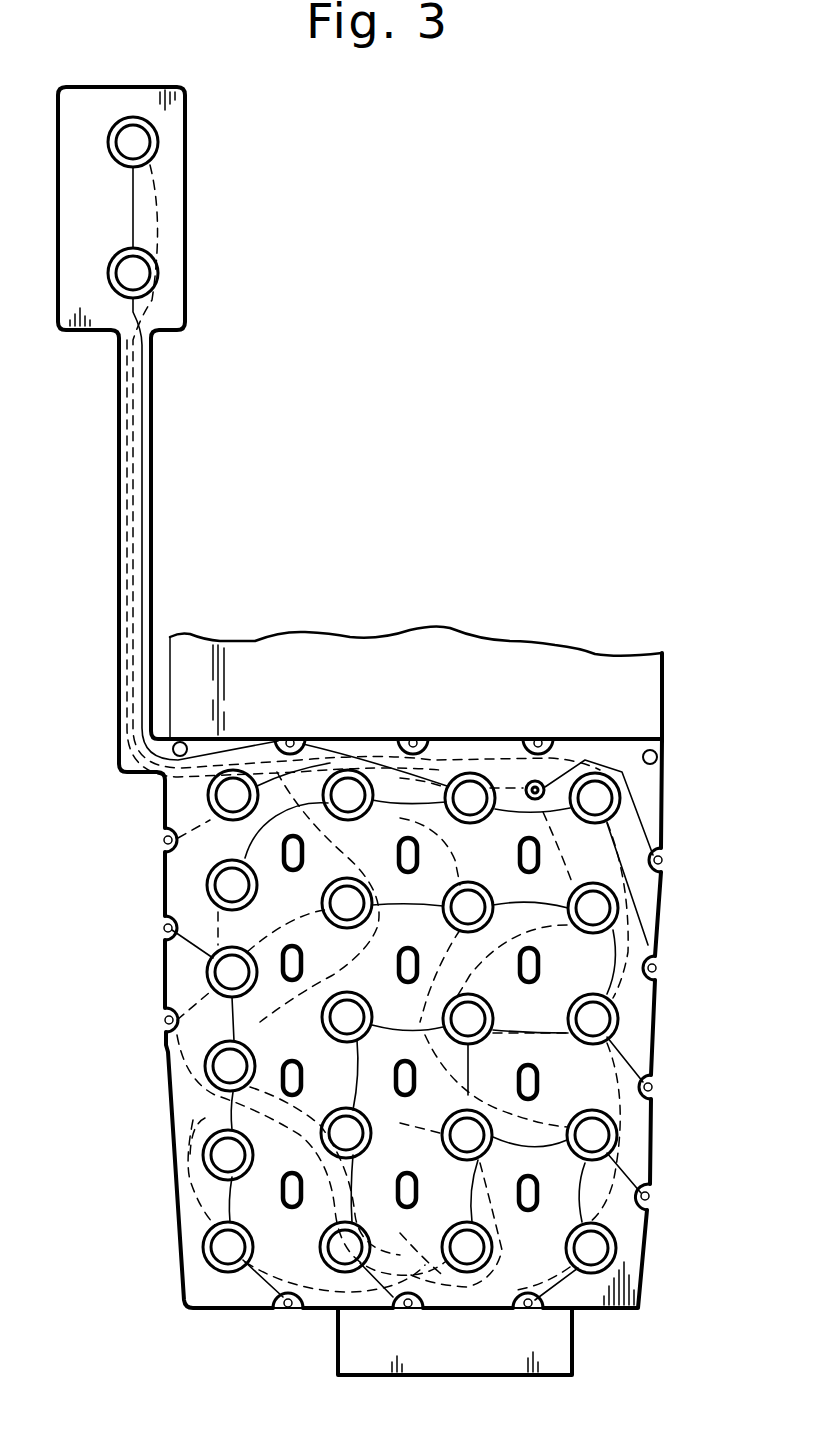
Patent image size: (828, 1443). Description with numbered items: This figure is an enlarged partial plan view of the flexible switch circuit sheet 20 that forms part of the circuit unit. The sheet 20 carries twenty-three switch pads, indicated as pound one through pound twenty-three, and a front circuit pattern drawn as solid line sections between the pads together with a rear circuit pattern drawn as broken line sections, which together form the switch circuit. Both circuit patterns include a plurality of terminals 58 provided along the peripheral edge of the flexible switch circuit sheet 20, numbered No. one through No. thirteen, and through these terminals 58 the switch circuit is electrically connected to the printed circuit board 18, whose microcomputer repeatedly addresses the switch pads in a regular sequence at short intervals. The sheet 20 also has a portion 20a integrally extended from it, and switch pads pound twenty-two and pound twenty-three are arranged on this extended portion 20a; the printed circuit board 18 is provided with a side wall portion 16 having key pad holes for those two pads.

The side wall portion 16 is at (667, 708).
The printed circuit board 18 is at (653, 682).
The flexible switch circuit sheet 20 is at (650, 1033).
The extended portion 20a is at (175, 307).
The terminals 58 is at (303, 740).